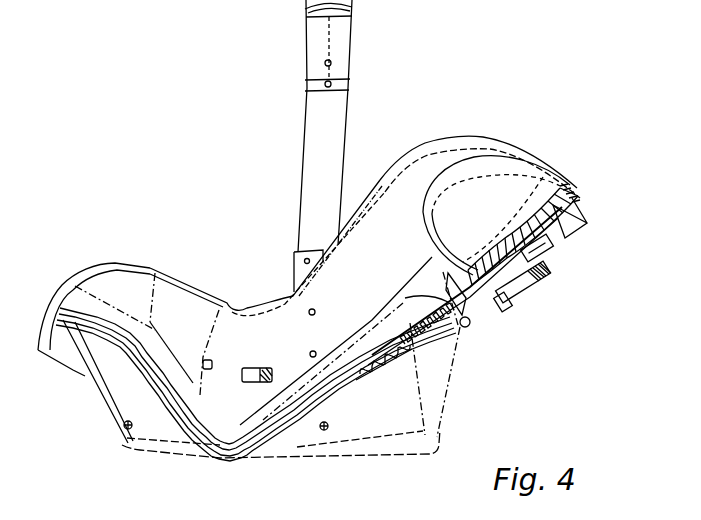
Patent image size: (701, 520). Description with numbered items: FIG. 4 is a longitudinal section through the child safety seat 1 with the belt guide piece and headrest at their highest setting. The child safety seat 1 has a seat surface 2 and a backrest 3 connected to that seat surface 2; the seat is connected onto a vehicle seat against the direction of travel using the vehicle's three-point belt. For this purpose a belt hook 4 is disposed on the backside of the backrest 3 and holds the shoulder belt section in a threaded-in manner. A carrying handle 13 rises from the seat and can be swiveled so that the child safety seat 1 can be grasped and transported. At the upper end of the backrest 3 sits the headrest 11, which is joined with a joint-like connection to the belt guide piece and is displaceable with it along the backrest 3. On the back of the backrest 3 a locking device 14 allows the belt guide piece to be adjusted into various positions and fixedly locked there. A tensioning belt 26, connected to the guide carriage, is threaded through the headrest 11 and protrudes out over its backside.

The child safety seat 1 is at (195, 185).
The seat surface 2 is at (121, 251).
The backrest 3 is at (420, 172).
The belt hook 4 is at (527, 299).
The headrest 11 is at (513, 175).
The carrying handle 13 is at (314, 107).
The locking device 14 is at (433, 351).
The tensioning belt 26 is at (571, 172).